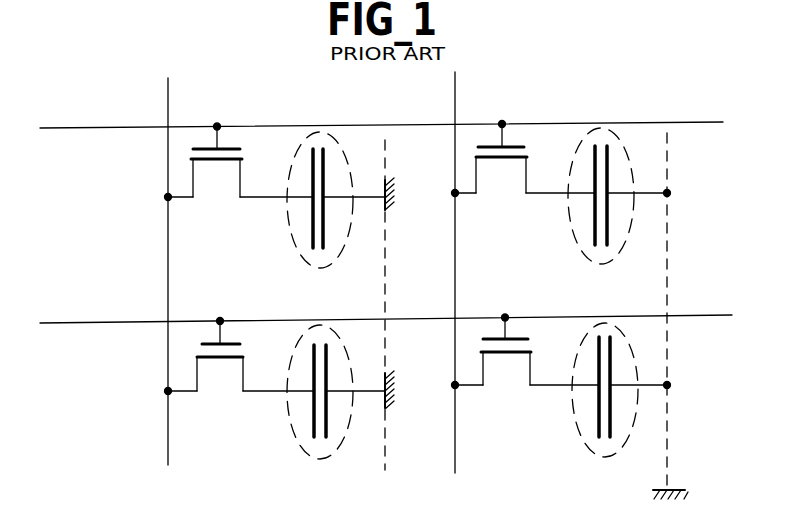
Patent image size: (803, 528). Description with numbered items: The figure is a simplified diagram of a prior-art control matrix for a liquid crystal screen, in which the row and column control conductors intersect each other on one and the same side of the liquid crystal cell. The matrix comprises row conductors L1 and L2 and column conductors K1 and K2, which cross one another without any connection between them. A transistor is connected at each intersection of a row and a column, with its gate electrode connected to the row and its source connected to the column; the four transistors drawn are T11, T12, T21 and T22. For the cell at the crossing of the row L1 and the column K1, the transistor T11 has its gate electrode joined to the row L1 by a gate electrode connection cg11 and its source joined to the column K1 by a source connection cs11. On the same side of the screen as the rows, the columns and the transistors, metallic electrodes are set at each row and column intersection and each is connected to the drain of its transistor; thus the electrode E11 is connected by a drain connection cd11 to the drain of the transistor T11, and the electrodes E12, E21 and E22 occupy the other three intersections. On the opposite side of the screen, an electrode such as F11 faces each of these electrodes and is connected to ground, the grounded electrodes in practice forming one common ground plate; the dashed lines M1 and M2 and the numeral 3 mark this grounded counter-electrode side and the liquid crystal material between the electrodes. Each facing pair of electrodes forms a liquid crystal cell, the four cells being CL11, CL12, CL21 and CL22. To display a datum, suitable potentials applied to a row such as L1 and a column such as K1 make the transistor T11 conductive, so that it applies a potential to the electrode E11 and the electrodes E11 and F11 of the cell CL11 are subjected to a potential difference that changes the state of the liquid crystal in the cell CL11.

The row conductor L1 is at (376, 116).
The row conductor L2 is at (381, 310).
The column conductor K1 is at (164, 291).
The column conductor K2 is at (462, 289).
The transistor T11 is at (241, 149).
The transistor T12 is at (503, 142).
The transistor T21 is at (241, 344).
The transistor T22 is at (529, 339).
The gate electrode connection cg11 is at (216, 134).
The source connection cs11 is at (193, 178).
The drain connection cd11 is at (228, 197).
The liquid crystal cell CL11 is at (340, 151).
The liquid crystal cell CL12 is at (621, 147).
The liquid crystal cell CL21 is at (304, 446).
The liquid crystal cell CL22 is at (593, 452).
The electrode E11 is at (313, 213).
The electrode E12 is at (595, 218).
The electrode E21 is at (314, 405).
The electrode E22 is at (599, 406).
The electrode F11 is at (324, 249).
The liquid crystal layer 3 is at (327, 258).
The first common electrode (ground) line M1 is at (386, 462).
The second common electrode (ground) line M2 is at (668, 468).